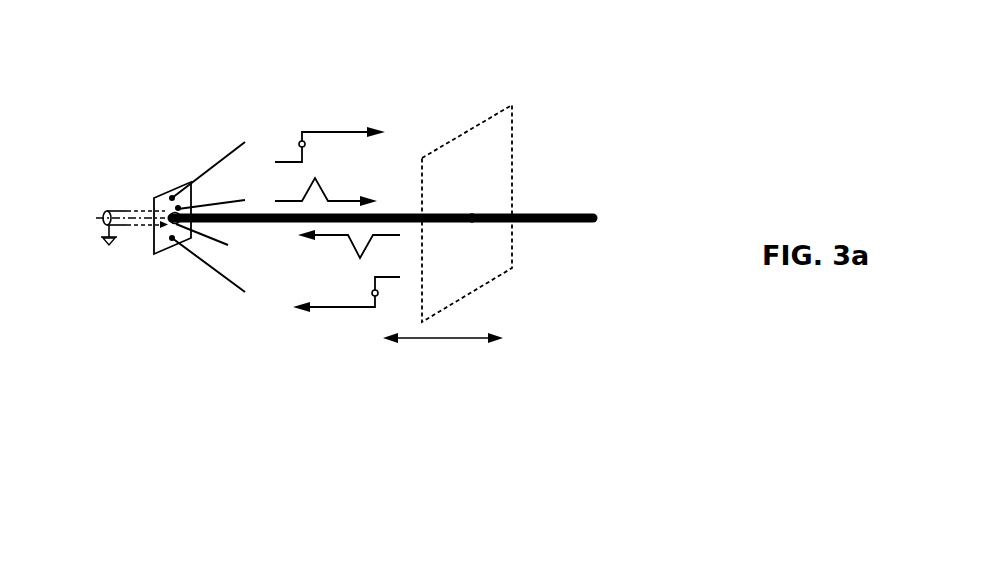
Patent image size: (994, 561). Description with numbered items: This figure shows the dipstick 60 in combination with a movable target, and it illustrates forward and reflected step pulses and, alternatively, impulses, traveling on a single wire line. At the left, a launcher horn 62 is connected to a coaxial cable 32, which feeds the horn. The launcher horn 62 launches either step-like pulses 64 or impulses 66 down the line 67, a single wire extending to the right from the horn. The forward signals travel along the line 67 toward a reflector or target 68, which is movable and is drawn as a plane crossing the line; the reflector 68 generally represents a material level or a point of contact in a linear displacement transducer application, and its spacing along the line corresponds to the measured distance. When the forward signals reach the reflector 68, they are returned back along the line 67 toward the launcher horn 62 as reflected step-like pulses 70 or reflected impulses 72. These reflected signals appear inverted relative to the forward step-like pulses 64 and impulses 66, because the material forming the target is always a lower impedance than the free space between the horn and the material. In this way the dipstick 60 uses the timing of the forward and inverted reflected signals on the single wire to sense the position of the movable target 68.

The dipstick 60 is at (595, 85).
The coaxial cable 32 is at (126, 208).
The launcher horn 62 is at (189, 130).
The step-like pulses 64 is at (348, 131).
The impulses 66 is at (375, 200).
The line 67 is at (550, 215).
The reflector (target) 68 is at (508, 275).
The reflected step-like pulses 70 is at (332, 312).
The reflected impulses 72 is at (303, 242).